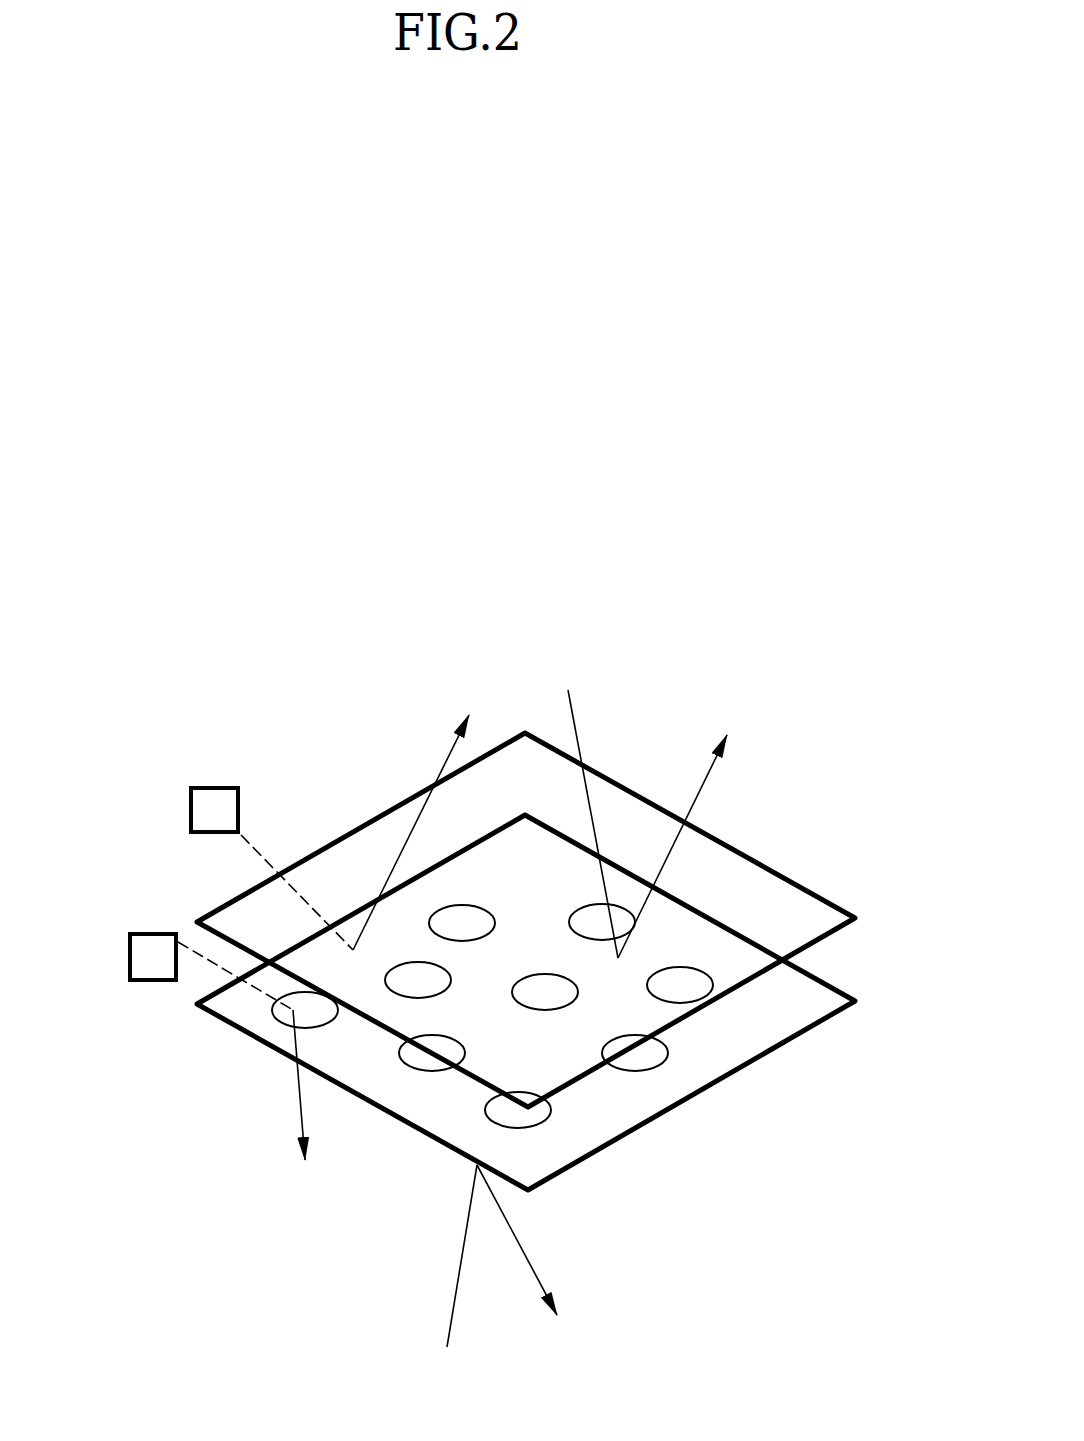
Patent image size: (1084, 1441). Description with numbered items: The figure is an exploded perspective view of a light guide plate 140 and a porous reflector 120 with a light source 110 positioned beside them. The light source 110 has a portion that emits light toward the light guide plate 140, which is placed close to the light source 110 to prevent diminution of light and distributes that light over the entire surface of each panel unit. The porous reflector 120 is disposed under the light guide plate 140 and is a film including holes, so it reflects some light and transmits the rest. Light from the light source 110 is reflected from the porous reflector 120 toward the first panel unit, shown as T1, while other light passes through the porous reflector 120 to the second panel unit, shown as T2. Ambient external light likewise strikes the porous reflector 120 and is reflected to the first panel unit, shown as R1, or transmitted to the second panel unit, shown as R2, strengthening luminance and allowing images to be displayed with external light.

The light source 110 is at (150, 942).
The porous reflector 120 is at (728, 1055).
The light guide plate 140 is at (820, 910).
The reflected light source light T1 is at (364, 811).
The reflected external light R1 is at (665, 821).
The transmitted light source light T2 is at (260, 1075).
The transmitted external light R2 is at (524, 1265).